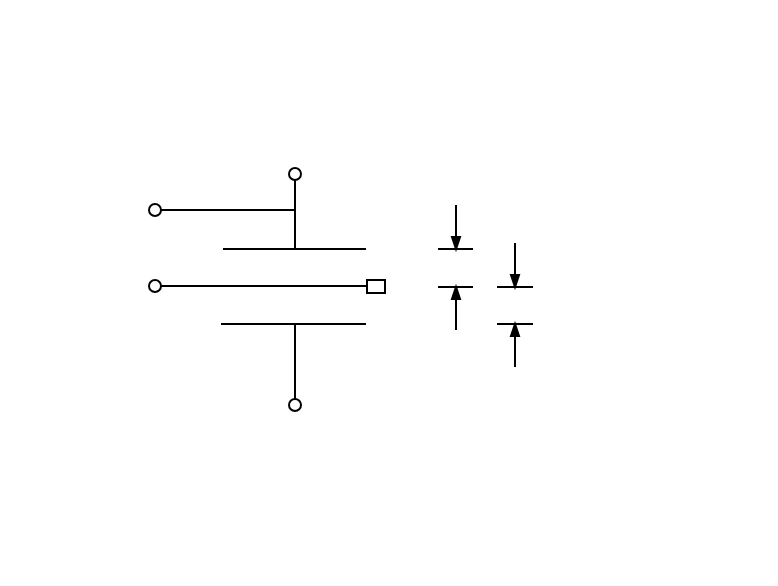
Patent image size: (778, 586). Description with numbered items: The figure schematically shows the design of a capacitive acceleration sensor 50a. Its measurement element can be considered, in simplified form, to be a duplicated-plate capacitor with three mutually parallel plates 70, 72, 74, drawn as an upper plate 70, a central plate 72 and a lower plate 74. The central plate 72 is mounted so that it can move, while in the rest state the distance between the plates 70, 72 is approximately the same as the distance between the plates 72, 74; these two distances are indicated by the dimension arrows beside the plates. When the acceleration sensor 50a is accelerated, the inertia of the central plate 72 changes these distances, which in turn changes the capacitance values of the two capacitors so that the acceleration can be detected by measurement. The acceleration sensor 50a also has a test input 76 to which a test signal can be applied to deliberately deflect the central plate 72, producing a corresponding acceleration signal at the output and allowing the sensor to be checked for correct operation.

The capacitive acceleration sensor 50a is at (462, 163).
The plate 70 is at (325, 249).
The central plate 72 is at (247, 287).
The plate 74 is at (337, 325).
The test input 76 is at (153, 242).